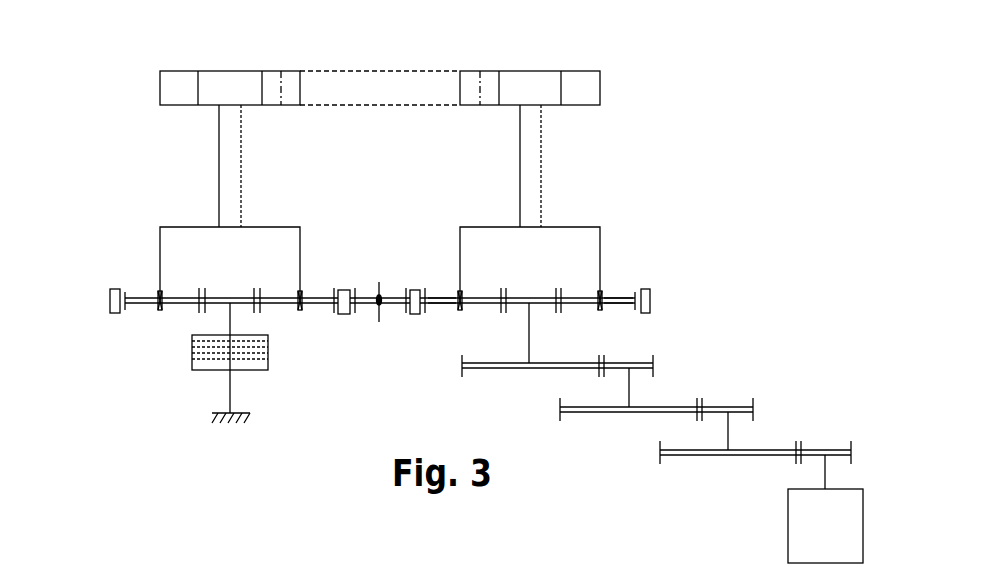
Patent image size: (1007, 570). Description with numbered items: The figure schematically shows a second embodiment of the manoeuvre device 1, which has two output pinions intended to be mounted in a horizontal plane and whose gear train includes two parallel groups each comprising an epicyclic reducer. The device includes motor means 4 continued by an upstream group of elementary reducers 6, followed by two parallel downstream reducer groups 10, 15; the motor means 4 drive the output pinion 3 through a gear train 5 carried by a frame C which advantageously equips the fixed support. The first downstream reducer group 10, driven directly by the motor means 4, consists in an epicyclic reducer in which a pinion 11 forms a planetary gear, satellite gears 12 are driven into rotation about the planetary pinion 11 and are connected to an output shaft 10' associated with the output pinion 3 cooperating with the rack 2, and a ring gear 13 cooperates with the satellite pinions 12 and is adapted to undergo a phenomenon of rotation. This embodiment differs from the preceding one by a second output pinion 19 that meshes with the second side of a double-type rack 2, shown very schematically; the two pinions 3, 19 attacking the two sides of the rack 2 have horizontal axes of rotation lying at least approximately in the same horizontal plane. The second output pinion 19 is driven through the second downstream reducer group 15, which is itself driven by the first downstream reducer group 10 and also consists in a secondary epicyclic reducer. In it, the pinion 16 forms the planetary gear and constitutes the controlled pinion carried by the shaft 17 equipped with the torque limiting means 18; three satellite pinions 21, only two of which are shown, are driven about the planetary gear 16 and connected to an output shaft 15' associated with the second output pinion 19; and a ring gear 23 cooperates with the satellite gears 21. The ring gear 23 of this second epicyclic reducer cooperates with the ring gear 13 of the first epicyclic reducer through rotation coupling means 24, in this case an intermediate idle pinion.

The manoeuvre device 1 is at (355, 405).
The rack 2 is at (353, 84).
The output pinion 3 is at (530, 80).
The motor means 4 is at (812, 516).
The gear train 5 is at (608, 452).
The upstream group of elementary reducers 6 is at (656, 404).
The first downstream reducer group 10 is at (624, 270).
The output shaft 10' is at (500, 166).
The pinion 11 is at (520, 298).
The satellite gears 12 is at (440, 304).
The ring gear 13 is at (414, 306).
The second downstream reducer group 15 is at (174, 270).
The output shaft 15' is at (193, 166).
The pinion 16 is at (232, 298).
The shaft 17 is at (230, 392).
The torque limiting means 18 is at (176, 365).
The second output pinion 19 is at (172, 93).
The satellite pinions 21 is at (142, 304).
The ring gear 23 is at (341, 300).
The rotation coupling means 24 is at (379, 297).
The frame C is at (216, 425).